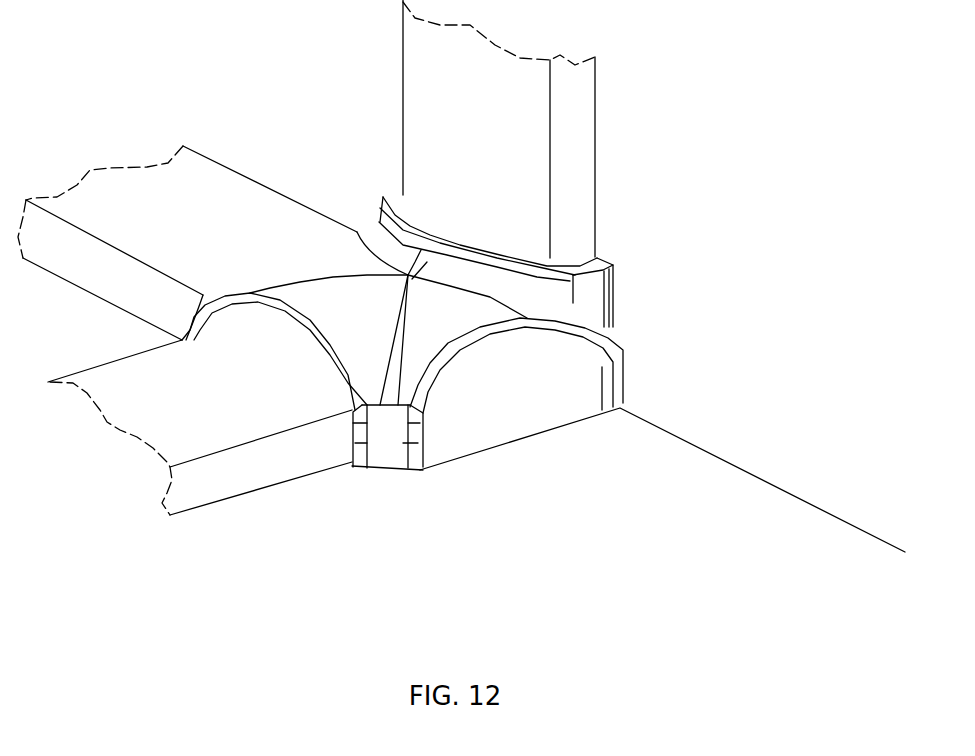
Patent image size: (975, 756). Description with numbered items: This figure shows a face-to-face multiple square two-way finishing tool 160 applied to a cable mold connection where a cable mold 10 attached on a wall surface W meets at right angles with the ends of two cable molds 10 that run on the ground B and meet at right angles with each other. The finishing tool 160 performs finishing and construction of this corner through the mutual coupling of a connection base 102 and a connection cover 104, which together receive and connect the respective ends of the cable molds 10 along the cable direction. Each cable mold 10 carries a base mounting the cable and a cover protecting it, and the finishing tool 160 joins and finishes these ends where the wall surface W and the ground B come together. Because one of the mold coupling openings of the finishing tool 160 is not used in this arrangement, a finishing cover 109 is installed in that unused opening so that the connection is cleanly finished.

The cable mold 10 is at (187, 223).
The connection base 102 is at (388, 452).
The connection cover 104 is at (367, 367).
The face-to-face multiple square two-way finishing tool 160 is at (362, 490).
The finishing cover 109 is at (507, 404).
The wall surface W is at (742, 243).
The ground B is at (611, 520).